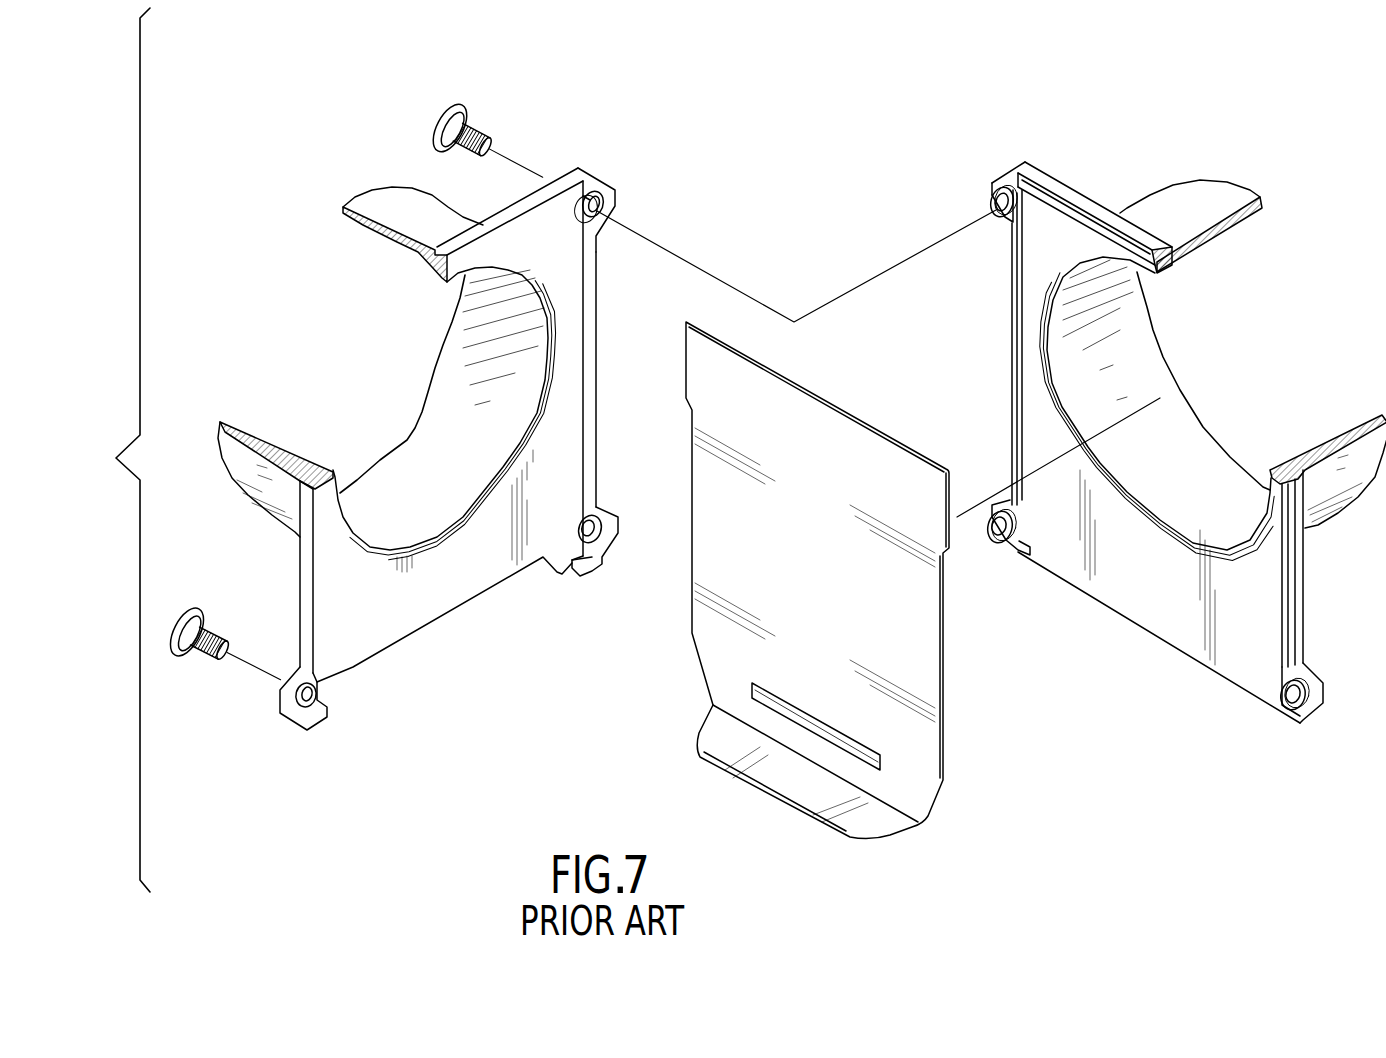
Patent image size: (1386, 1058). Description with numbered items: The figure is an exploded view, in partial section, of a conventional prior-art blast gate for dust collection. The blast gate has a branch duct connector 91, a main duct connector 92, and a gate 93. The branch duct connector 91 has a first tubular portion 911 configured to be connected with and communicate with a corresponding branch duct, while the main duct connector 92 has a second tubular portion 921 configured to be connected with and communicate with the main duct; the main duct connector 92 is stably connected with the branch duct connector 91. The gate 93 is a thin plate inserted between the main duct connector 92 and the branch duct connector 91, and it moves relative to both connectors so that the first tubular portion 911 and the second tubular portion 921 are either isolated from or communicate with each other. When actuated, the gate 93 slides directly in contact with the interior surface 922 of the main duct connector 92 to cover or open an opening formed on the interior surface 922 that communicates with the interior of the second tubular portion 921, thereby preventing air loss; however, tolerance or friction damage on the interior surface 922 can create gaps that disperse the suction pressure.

The branch duct connector 91 is at (418, 410).
The first tubular portion 911 is at (433, 450).
The main duct connector 92 is at (1185, 404).
The second tubular portion 921 is at (1190, 467).
The interior surface 922 is at (1147, 597).
The gate 93 is at (713, 652).